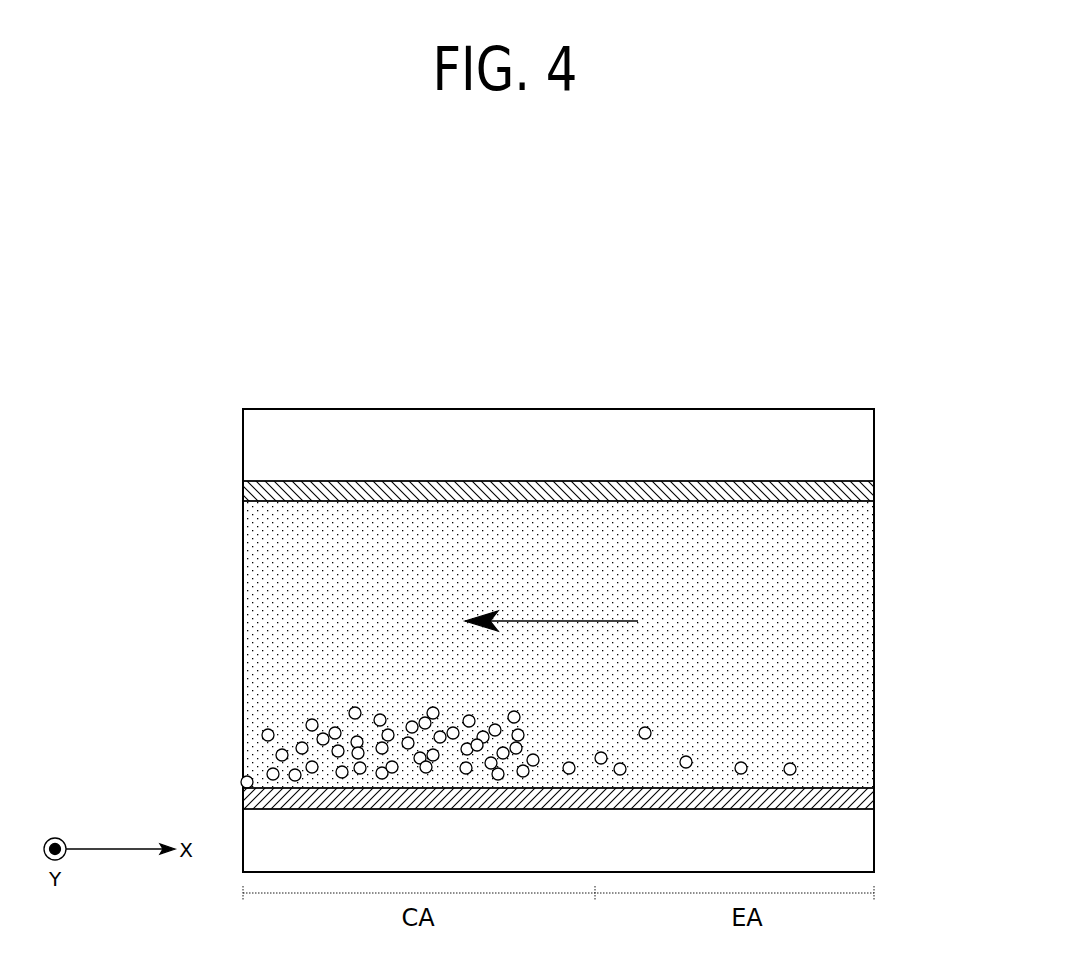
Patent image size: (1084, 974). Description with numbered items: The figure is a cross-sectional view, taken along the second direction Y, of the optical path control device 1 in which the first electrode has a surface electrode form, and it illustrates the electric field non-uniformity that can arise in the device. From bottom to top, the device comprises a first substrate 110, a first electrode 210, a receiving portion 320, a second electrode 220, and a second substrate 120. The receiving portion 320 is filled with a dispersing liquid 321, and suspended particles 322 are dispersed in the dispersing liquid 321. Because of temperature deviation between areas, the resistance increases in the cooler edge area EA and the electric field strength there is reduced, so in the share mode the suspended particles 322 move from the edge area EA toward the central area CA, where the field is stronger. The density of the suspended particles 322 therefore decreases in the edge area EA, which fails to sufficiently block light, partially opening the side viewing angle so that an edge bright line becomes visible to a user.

The optical path control device 1 is at (712, 390).
The first substrate 110 is at (874, 845).
The second substrate 120 is at (874, 442).
The first electrode 210 is at (874, 795).
The second electrode 220 is at (874, 487).
The receiving portion 320 is at (874, 598).
The dispersing liquid 321 is at (830, 686).
The suspended particles 322 is at (797, 766).